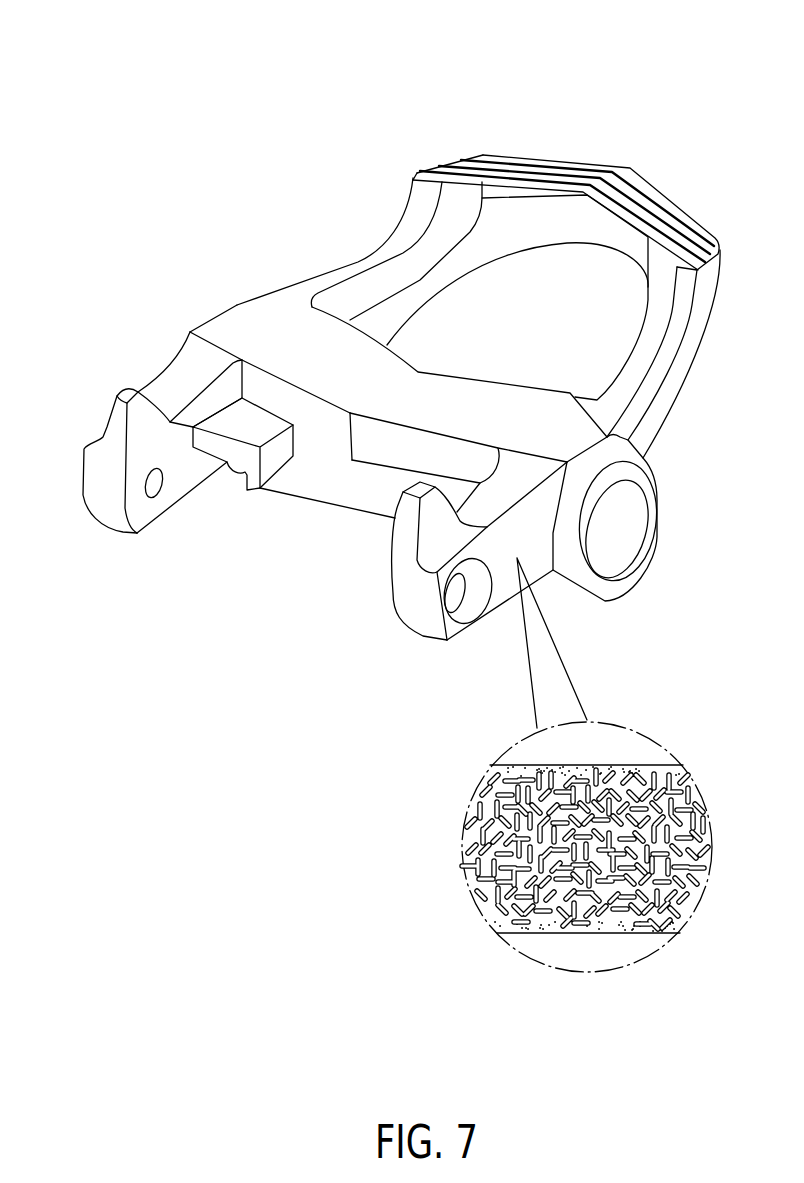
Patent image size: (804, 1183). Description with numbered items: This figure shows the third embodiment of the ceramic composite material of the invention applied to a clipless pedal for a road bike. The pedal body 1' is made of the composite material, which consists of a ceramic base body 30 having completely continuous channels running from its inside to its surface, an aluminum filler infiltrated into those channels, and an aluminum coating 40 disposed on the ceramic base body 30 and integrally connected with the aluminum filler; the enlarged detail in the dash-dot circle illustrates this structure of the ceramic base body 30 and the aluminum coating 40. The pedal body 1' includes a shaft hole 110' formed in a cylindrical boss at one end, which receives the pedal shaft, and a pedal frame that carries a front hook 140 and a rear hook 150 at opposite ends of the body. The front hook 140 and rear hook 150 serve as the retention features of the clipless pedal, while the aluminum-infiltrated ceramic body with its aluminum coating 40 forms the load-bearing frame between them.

The pedal body 1' is at (428, 436).
The shaft hole 110' is at (672, 518).
The front hook 140 is at (592, 167).
The rear hook 150 is at (140, 420).
The ceramic base body 30 is at (473, 820).
The aluminum coating 40 is at (620, 768).